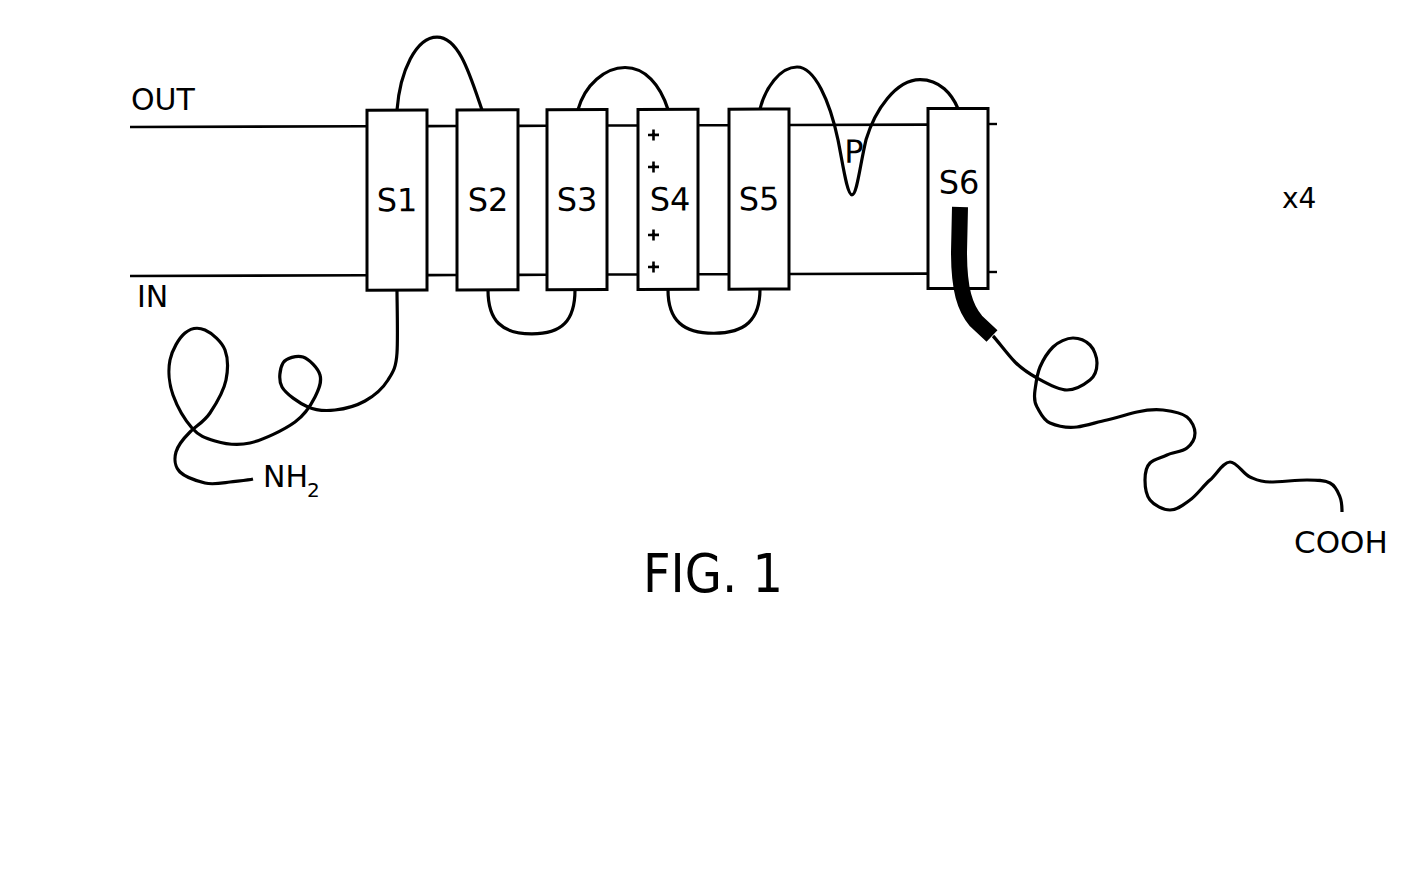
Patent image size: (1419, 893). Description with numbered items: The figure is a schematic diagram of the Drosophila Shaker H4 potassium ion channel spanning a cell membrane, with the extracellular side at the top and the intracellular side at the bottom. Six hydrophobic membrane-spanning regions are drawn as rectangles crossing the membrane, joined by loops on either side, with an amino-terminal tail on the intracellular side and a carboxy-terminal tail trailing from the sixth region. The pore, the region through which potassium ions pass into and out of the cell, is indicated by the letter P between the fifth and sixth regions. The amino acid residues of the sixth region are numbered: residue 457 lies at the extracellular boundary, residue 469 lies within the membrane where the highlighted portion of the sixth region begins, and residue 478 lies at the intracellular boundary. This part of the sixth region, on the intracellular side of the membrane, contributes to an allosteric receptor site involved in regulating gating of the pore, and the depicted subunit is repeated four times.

The amino acid residue of the S6 region 457 is at (1235, 123).
The amino acid residue of the S6 region 469 is at (1010, 258).
The amino acid residue of the S6 region 478 is at (1236, 270).